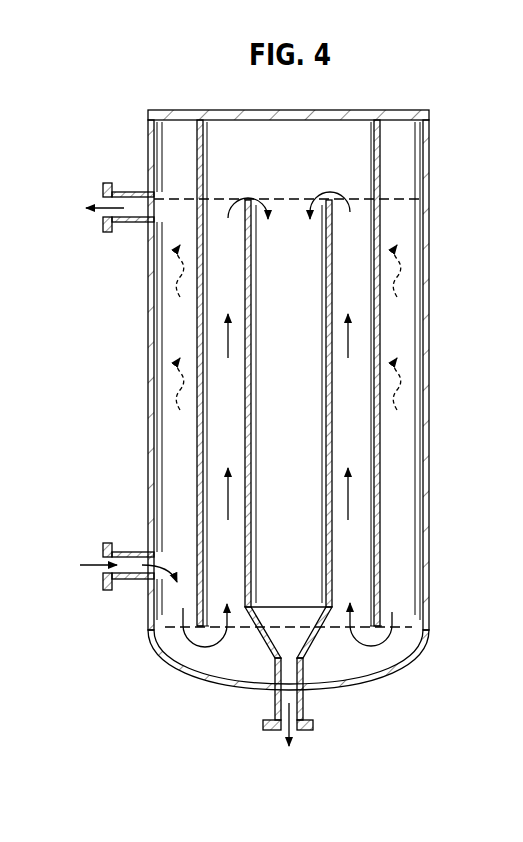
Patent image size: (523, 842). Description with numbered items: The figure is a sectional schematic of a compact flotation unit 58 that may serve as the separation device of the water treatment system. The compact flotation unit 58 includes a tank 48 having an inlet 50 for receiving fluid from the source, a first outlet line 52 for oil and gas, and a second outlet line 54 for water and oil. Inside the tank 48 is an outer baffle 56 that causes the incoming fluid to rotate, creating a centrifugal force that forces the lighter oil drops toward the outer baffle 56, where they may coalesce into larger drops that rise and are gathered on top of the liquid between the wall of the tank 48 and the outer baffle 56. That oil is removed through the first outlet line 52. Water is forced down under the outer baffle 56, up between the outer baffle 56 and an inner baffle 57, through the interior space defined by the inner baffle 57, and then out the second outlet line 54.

The compact flotation unit 58 is at (159, 97).
The tank 48 is at (430, 160).
The outer baffle 56 is at (380, 310).
The inner baffle 57 is at (250, 303).
The second outlet line 54 is at (303, 704).
The first outlet line 52 is at (133, 192).
The inlet 50 is at (133, 551).